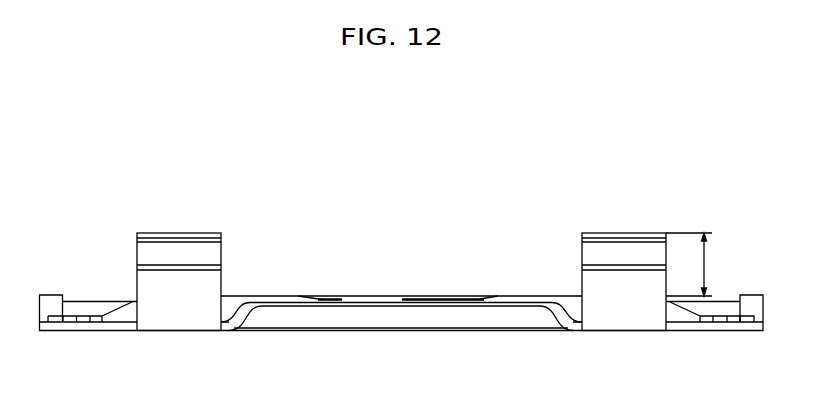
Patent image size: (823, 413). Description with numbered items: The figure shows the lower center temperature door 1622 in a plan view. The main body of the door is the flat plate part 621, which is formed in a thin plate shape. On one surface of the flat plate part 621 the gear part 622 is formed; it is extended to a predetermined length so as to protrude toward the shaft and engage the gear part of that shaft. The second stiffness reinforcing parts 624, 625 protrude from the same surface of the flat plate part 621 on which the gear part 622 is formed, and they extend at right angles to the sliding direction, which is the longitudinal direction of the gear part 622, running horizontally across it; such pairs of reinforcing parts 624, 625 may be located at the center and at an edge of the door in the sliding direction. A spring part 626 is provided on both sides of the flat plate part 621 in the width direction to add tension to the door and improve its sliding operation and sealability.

The lower center temperature door 1622 is at (475, 200).
The flat plate part 621 is at (687, 330).
The gear part 622 is at (624, 238).
The second stiffness reinforcing part 624 is at (330, 302).
The second stiffness reinforcing part 625 is at (398, 298).
The spring part 626 is at (52, 300).